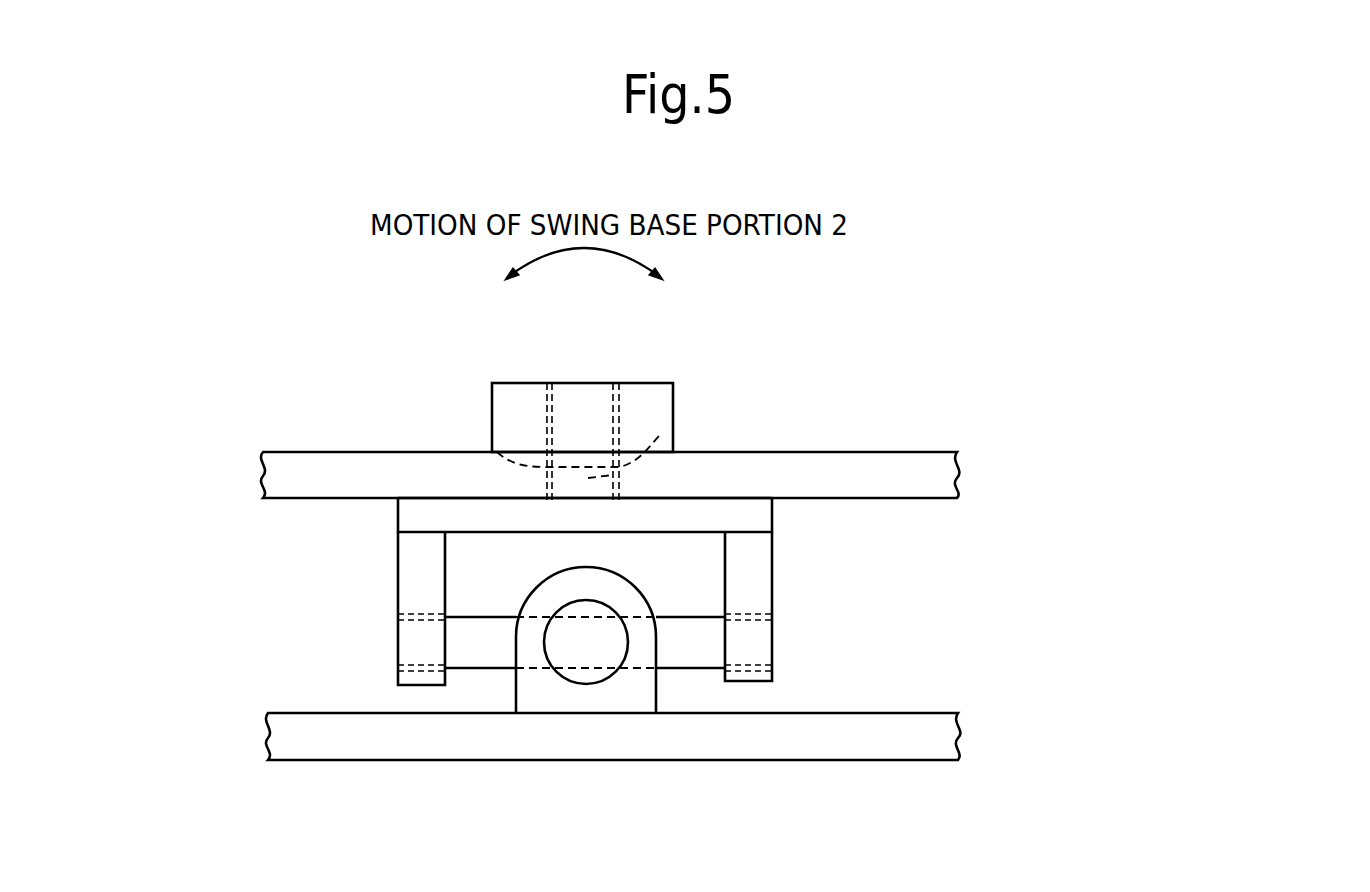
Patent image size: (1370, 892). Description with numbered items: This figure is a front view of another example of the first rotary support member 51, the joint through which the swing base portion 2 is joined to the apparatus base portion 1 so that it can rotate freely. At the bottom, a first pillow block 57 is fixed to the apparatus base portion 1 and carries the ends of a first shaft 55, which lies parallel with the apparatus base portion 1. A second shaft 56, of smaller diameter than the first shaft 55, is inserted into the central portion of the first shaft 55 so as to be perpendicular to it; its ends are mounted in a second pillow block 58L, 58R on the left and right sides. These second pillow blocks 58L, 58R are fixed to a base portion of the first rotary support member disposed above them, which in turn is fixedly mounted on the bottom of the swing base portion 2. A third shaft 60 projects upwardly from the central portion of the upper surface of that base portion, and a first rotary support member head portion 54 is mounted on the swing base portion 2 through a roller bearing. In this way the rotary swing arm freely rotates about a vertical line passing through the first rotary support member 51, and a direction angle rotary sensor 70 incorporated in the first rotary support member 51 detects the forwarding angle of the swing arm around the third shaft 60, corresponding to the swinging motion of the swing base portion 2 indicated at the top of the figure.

The apparatus base portion 1 is at (928, 742).
The swing base portion 2 is at (928, 478).
The first rotary support member 51 is at (470, 395).
The first rotary support member head portion 54 is at (637, 403).
The first shaft 55 is at (587, 645).
The second shaft 56 is at (697, 638).
The first pillow block 57 is at (603, 703).
The second pillow block 58L is at (413, 594).
The second pillow block 58R is at (757, 598).
The third shaft 60 is at (613, 475).
The direction angle rotary sensor 70 is at (497, 447).